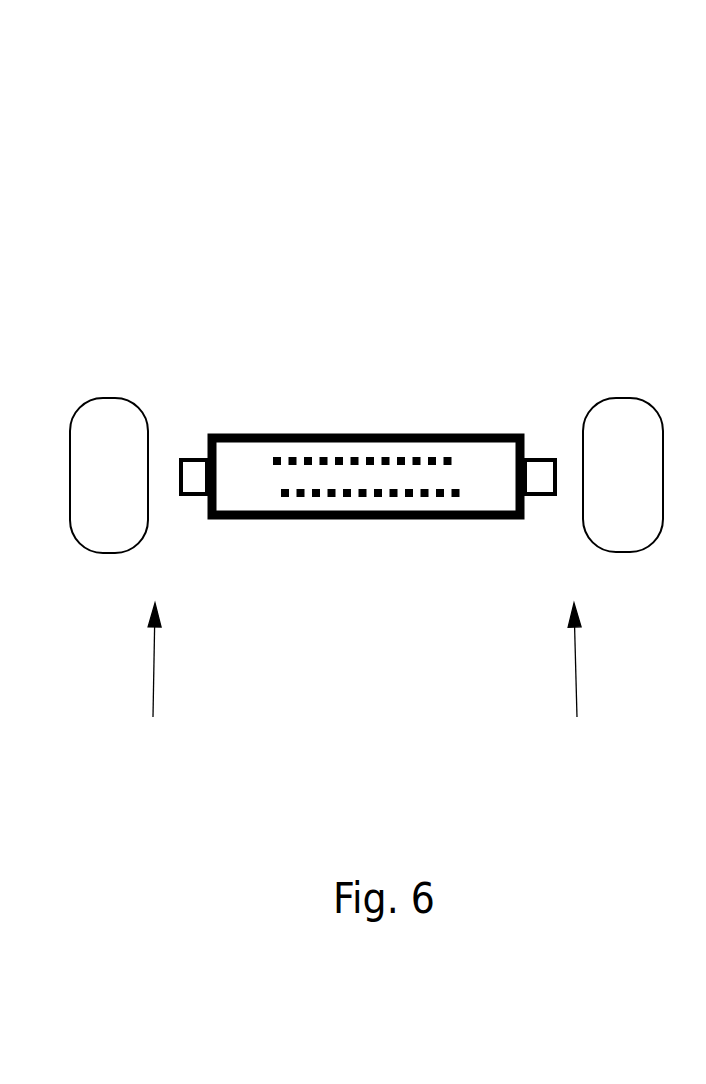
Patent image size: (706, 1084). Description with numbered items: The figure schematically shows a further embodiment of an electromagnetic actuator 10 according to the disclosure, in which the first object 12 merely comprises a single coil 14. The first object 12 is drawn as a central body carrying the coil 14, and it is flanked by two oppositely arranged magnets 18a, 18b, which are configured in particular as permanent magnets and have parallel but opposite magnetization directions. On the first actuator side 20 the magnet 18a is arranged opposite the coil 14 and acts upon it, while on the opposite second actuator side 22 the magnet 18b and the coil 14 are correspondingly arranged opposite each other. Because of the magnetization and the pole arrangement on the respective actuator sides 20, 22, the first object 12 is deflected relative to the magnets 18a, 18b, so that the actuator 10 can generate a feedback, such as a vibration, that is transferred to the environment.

The electromagnetic actuator 10 is at (234, 159).
The first object 12 is at (422, 373).
The coil 14 is at (385, 503).
The magnet 18a is at (108, 545).
The magnet 18b is at (630, 410).
The first actuator side 20 is at (152, 679).
The second actuator side 22 is at (576, 679).